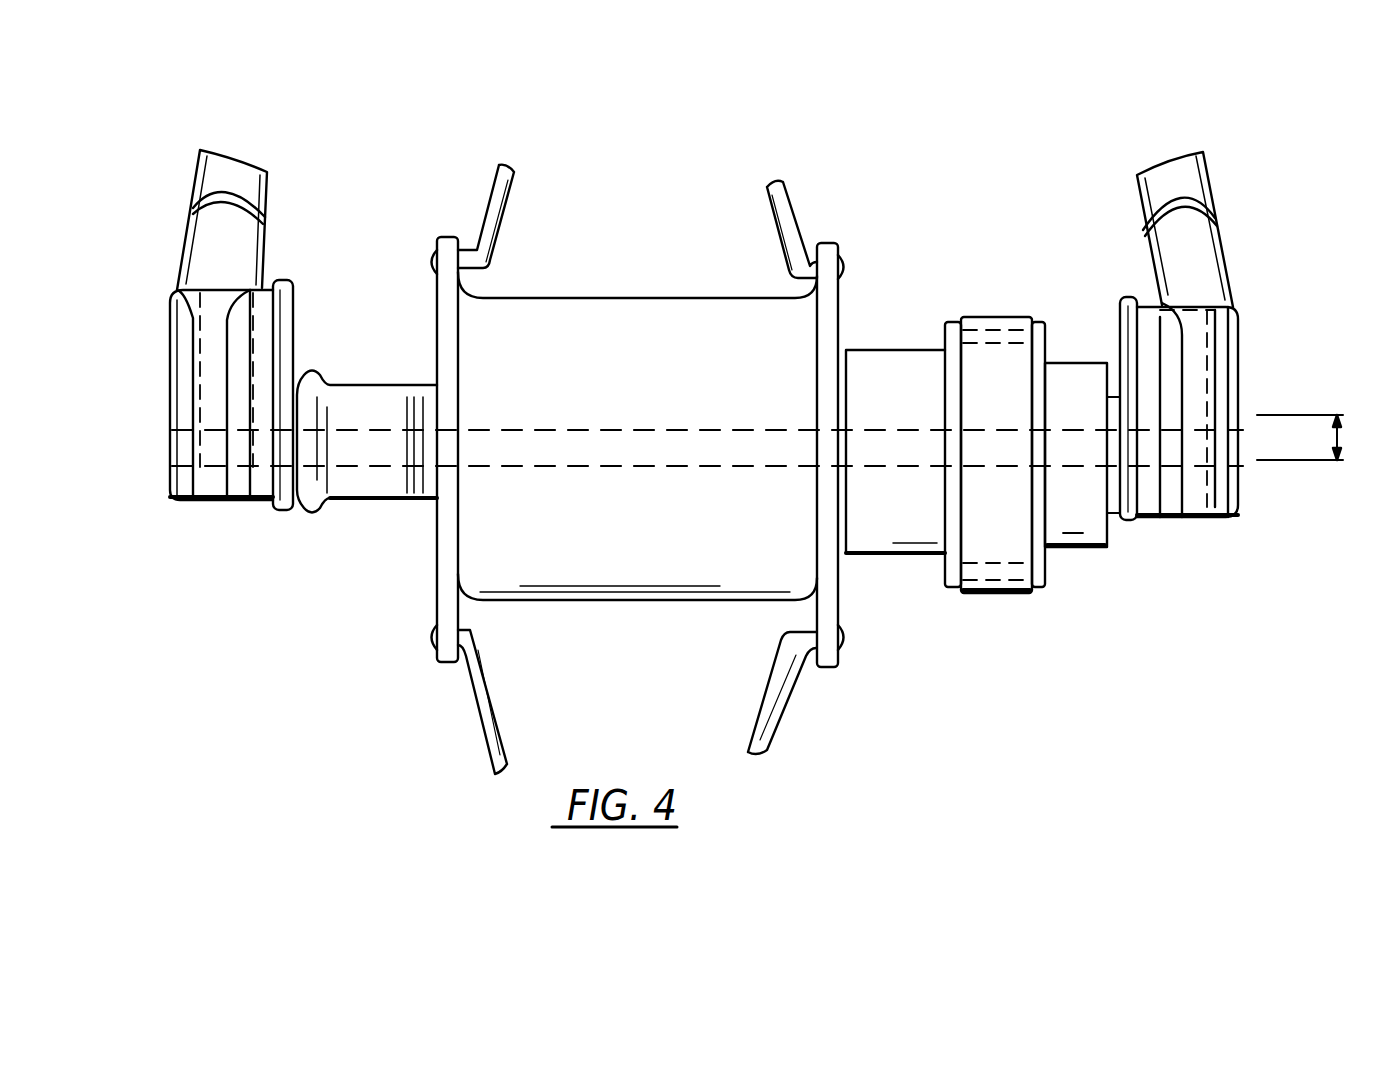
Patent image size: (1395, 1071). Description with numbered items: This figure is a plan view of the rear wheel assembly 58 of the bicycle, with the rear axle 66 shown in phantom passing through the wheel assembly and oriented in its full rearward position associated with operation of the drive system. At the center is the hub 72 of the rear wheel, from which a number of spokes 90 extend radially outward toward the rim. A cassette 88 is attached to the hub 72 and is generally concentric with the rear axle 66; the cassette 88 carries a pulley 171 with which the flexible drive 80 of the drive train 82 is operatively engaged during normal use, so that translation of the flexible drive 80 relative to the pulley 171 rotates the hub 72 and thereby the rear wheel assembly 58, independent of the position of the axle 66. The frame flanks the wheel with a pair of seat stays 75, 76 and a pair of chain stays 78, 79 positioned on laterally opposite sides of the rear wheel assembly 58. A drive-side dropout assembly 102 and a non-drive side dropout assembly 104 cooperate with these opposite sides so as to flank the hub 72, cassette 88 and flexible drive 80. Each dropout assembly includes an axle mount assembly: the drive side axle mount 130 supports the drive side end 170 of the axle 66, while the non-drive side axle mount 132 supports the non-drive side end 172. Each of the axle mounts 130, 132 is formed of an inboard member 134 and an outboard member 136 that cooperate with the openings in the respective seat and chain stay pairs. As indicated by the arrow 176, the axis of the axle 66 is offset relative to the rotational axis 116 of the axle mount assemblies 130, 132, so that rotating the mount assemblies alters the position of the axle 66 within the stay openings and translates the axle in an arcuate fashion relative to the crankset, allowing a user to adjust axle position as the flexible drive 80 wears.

The rear wheel assembly 58 is at (714, 442).
The rear axle 66 is at (923, 390).
The hub 72 is at (648, 371).
The seat stay 75 is at (1205, 170).
The seat stay 76 is at (268, 177).
The chain stay 78 is at (245, 503).
The chain stay 79 is at (1158, 510).
The flexible drive 80 is at (987, 594).
The drive train 82 is at (1011, 437).
The cassette 88 is at (1103, 323).
The spokes 90 is at (513, 192).
The drive-side dropout assembly 102 is at (1089, 435).
The non-drive side dropout assembly 104 is at (239, 394).
The rotational axis 116 is at (1318, 415).
The drive side axle mount 130 is at (1235, 360).
The non-drive side axle mount 132 is at (194, 325).
The inboard member 134 is at (288, 280).
The outboard member 136 is at (167, 478).
The drive side end 170 is at (1252, 468).
The pulley 171 is at (1056, 427).
The non-drive side end 172 is at (330, 317).
The arrow 176 is at (1345, 438).